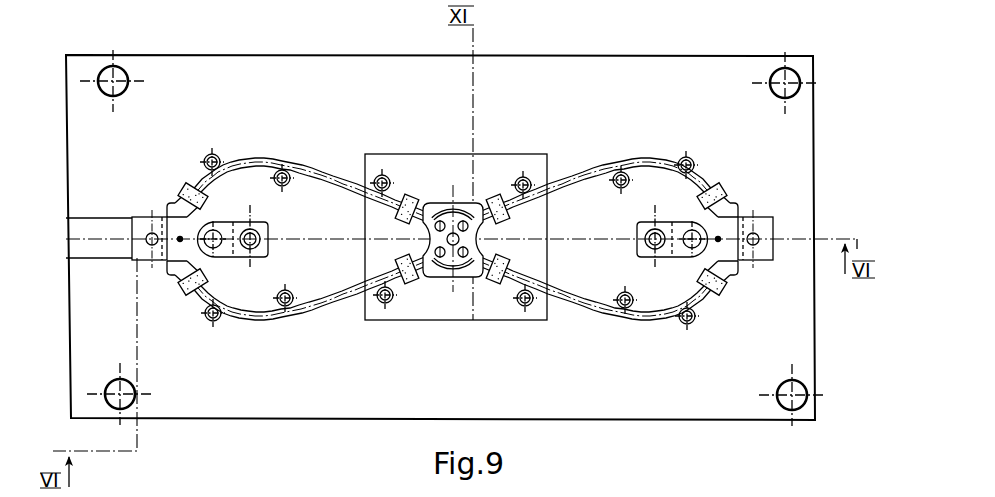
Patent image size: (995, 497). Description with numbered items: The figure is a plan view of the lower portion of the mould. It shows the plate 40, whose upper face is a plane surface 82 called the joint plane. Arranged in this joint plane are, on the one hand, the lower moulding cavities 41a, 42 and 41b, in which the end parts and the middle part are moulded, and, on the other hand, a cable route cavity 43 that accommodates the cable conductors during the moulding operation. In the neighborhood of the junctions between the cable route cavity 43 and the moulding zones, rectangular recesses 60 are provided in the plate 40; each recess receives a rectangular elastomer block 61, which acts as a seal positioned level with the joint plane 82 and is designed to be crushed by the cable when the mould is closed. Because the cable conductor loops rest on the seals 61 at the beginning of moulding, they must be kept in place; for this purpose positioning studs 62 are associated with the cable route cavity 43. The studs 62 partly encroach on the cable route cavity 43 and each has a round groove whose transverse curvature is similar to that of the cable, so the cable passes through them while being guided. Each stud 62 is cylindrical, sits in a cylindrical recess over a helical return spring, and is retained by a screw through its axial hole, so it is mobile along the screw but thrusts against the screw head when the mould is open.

The plate 40 is at (379, 80).
The lower moulding cavity 41a is at (131, 206).
The lower moulding cavity 41b is at (745, 208).
The lower moulding cavity 42 is at (435, 201).
The cable route cavity 43 is at (309, 157).
The rectangular recess 60 is at (192, 292).
The elastomer block 61 is at (219, 272).
The positioning stud 62 is at (220, 148).
The plane surface 82 is at (189, 115).